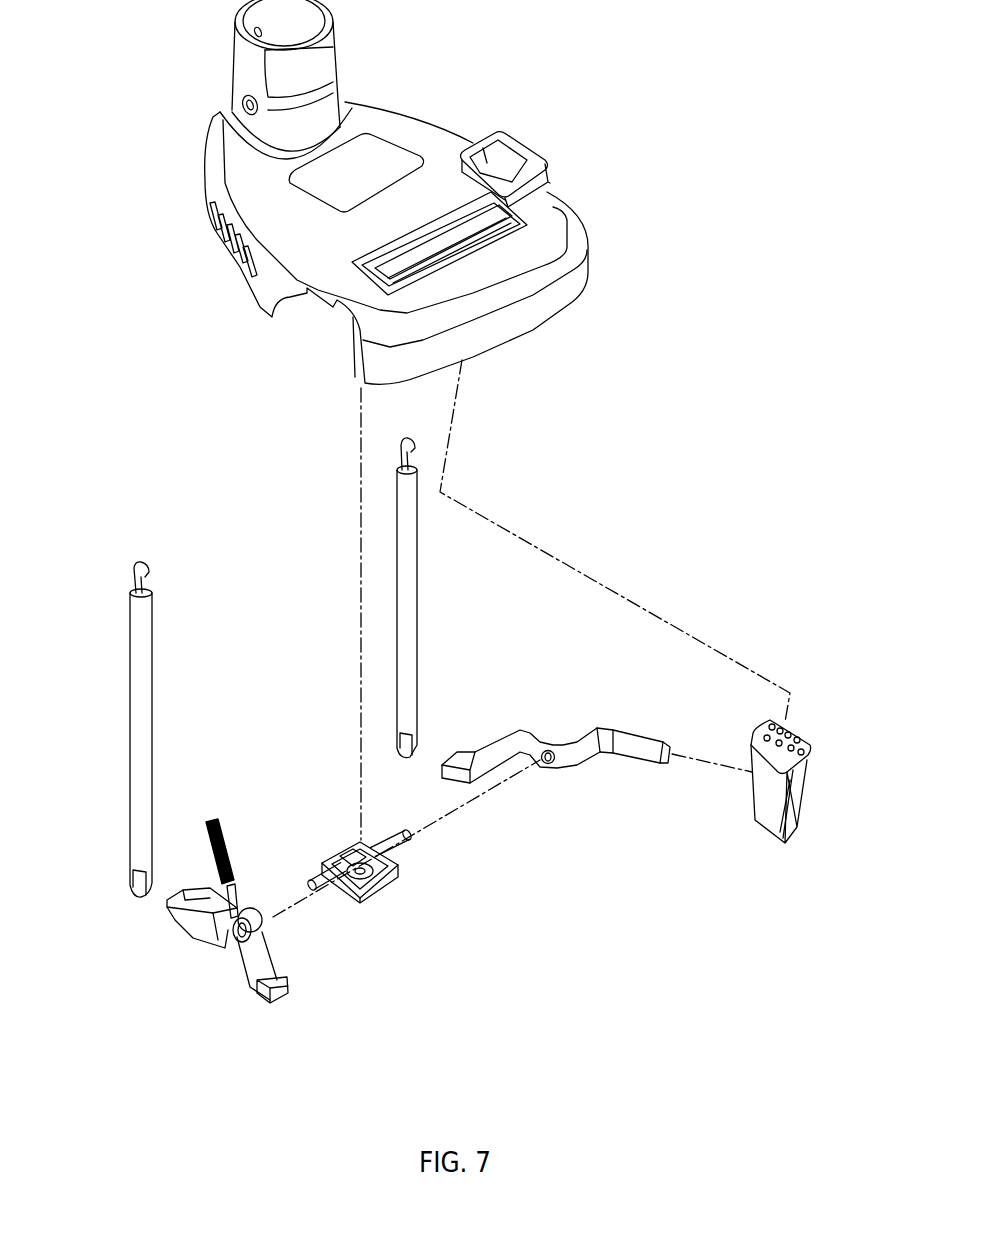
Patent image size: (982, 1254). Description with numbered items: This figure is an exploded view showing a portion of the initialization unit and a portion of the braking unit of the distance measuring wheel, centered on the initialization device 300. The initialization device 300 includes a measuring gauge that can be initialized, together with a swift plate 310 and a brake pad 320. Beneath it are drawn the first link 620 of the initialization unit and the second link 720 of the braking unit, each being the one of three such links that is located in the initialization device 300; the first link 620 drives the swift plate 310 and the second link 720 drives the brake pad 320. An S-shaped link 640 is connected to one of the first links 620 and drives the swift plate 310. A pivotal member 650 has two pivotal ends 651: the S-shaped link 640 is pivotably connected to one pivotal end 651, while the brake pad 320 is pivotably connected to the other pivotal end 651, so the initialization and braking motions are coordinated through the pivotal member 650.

The initialization device 300 is at (553, 198).
The swift plate 310 is at (793, 828).
The brake pad 320 is at (277, 1003).
The first link 620 is at (418, 610).
The S-shaped link 640 is at (600, 757).
The pivotal member 650 is at (378, 897).
The pivotal end 651 is at (318, 893).
The second link 720 is at (130, 707).